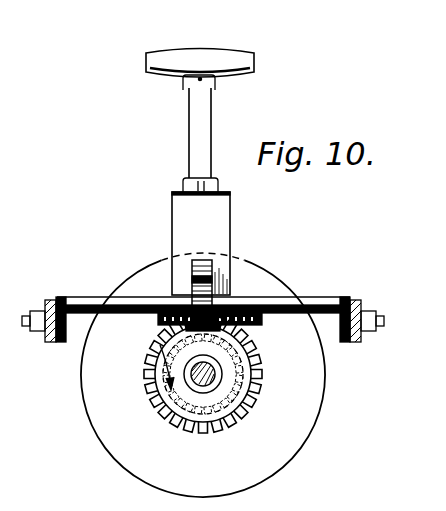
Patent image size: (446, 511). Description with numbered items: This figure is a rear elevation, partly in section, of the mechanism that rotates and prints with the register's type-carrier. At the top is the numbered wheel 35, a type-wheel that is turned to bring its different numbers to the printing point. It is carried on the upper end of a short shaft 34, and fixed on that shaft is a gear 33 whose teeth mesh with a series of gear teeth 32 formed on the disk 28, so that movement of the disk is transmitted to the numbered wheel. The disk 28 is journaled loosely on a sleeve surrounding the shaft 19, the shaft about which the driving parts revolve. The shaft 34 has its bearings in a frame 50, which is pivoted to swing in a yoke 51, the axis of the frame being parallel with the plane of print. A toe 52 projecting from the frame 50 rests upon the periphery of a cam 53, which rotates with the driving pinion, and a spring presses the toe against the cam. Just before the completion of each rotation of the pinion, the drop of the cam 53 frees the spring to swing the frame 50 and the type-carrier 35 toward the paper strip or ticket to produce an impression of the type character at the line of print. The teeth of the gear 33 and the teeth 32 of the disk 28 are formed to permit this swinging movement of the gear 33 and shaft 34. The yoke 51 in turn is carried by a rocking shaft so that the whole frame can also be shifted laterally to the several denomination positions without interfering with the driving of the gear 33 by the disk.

The numbered wheel 35 is at (173, 69).
The short shaft 34 is at (193, 134).
The toe 52 is at (218, 269).
The frame 50 is at (126, 300).
The yoke 51 is at (48, 336).
The gear 33 is at (252, 318).
The cam 53 is at (186, 402).
The gear teeth 32 is at (258, 382).
The shaft 19 is at (212, 380).
The disk 28 is at (203, 375).